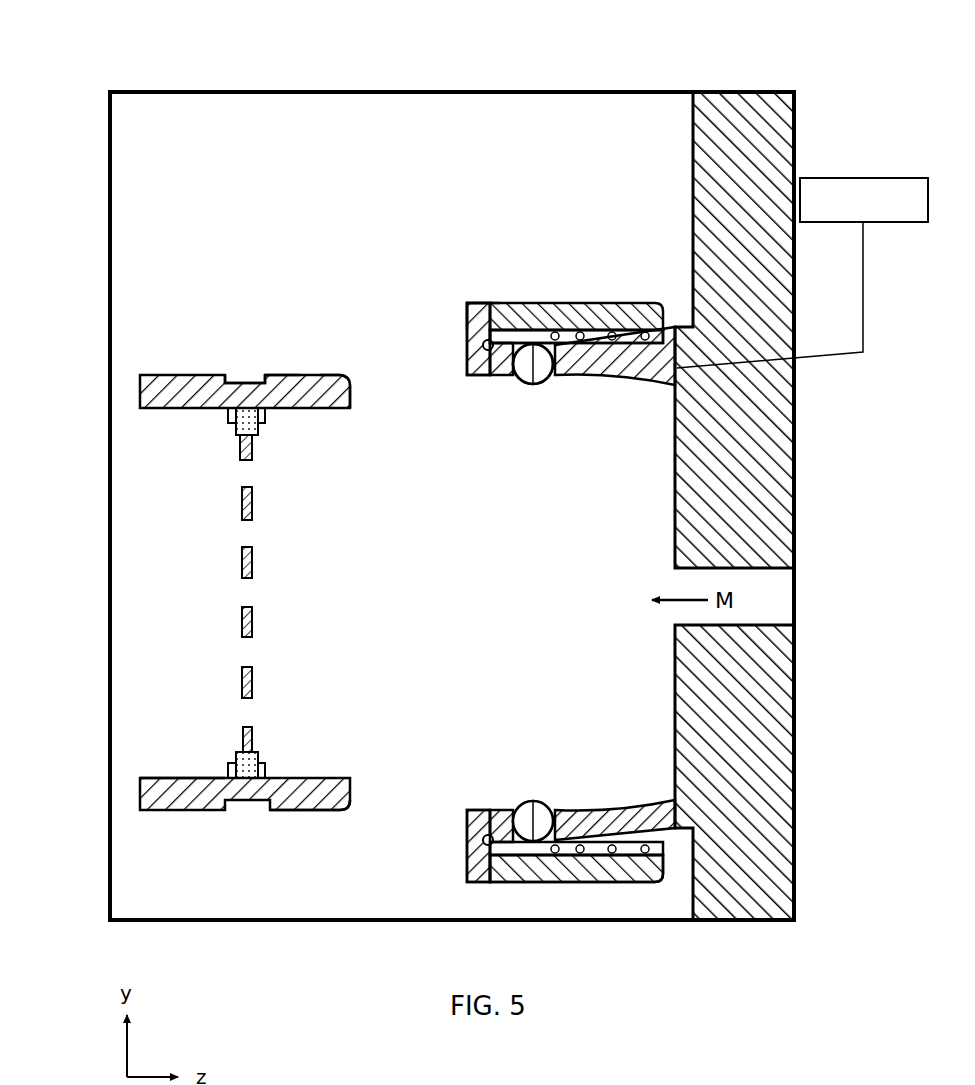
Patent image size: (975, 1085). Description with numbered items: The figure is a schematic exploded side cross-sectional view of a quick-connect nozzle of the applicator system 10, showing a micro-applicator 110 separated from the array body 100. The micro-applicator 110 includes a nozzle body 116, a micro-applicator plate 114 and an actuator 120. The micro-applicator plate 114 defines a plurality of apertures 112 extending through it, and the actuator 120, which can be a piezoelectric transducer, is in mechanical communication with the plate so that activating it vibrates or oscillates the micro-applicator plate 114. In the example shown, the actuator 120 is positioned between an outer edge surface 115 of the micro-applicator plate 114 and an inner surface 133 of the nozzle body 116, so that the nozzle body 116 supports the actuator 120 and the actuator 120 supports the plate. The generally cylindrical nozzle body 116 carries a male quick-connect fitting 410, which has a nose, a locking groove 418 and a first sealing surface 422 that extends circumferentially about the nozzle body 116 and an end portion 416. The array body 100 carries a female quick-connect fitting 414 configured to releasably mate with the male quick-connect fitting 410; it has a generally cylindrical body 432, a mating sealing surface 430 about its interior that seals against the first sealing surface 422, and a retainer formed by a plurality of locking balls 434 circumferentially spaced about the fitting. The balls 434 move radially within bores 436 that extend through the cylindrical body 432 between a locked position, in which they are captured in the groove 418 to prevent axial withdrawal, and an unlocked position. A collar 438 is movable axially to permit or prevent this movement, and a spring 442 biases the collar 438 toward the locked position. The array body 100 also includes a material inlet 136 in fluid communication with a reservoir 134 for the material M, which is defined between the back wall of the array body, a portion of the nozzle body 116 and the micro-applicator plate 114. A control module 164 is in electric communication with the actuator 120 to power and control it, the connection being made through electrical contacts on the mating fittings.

The glass manufacturing system 10 is at (256, 118).
The array body 100 is at (689, 121).
The micro-applicator 110 is at (136, 392).
The apertures 112 is at (252, 490).
The micro-applicator plate 114 is at (236, 448).
The outer edge surface 115 is at (258, 755).
The nozzle body 116 is at (140, 798).
The actuator 120 is at (235, 762).
The inner surface 133 is at (200, 778).
The reservoir 134 is at (626, 530).
The material inlet 136 is at (781, 617).
The control module 164 is at (856, 178).
The male quick-connect fitting 410 is at (272, 374).
The female quick-connect fitting 414 is at (492, 296).
The plate end portion 416 is at (351, 374).
The locking groove 418 is at (245, 384).
The first sealing surface 422 is at (328, 810).
The mating sealing surface 430 is at (625, 805).
The cylindrical body 432 is at (467, 828).
The locking balls 434 is at (518, 380).
The bores 436 is at (476, 364).
The collar 438 is at (467, 305).
The spring 442 is at (585, 335).